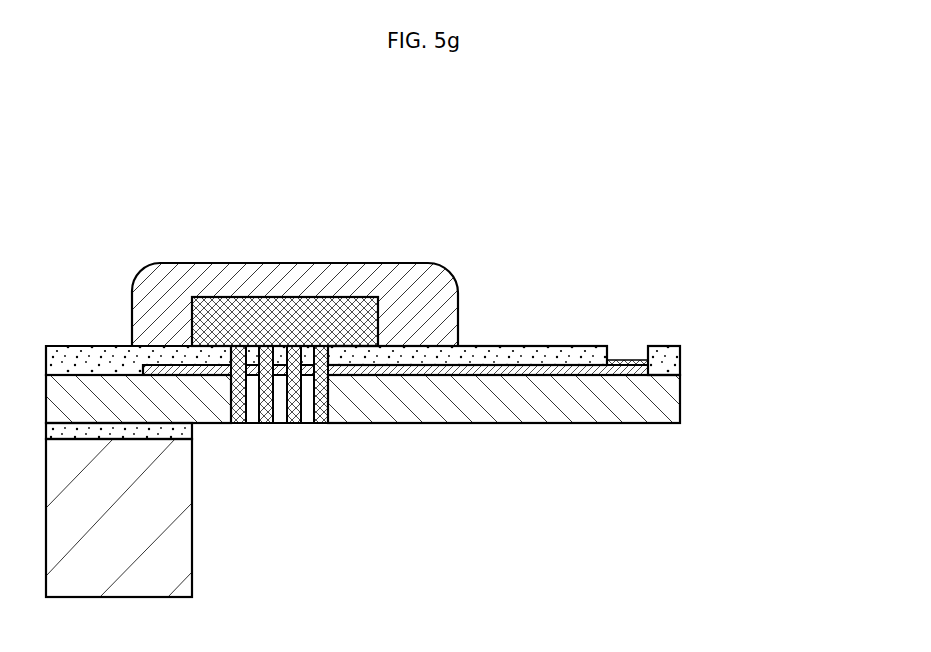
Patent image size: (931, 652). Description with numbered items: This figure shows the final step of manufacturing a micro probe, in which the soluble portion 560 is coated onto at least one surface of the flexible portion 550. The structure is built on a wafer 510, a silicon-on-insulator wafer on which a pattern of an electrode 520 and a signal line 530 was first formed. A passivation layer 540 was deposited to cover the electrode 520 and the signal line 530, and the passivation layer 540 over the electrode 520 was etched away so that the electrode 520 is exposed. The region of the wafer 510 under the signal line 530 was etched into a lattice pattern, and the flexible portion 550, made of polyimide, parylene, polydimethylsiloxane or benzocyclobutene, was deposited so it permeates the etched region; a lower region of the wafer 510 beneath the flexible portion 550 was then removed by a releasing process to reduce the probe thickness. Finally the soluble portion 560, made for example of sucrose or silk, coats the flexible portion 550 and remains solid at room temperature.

The wafer 510 is at (645, 407).
The electrode 520 is at (632, 362).
The signal line 530 is at (655, 370).
The passivation layer 540 is at (480, 358).
The flexible portion 550 is at (245, 310).
The soluble portion 560 is at (347, 263).